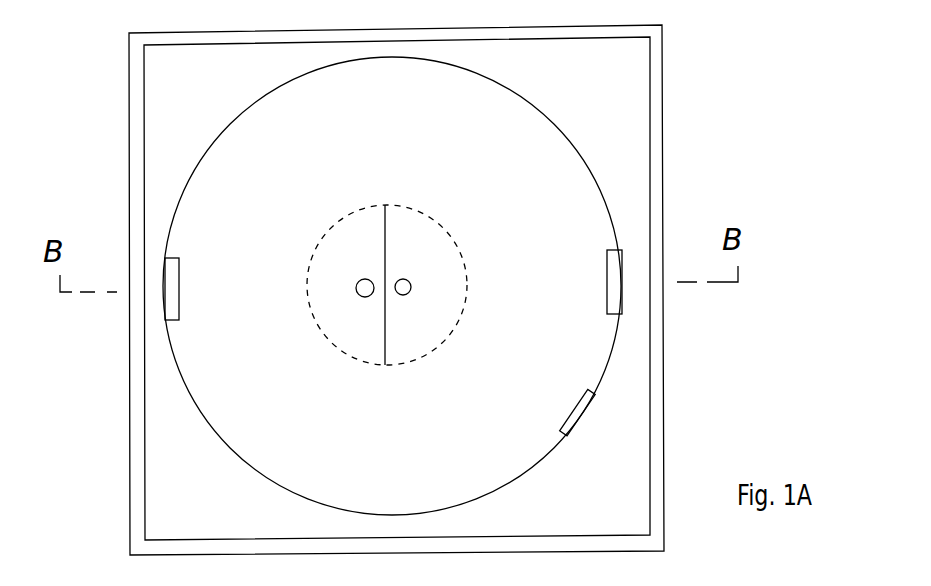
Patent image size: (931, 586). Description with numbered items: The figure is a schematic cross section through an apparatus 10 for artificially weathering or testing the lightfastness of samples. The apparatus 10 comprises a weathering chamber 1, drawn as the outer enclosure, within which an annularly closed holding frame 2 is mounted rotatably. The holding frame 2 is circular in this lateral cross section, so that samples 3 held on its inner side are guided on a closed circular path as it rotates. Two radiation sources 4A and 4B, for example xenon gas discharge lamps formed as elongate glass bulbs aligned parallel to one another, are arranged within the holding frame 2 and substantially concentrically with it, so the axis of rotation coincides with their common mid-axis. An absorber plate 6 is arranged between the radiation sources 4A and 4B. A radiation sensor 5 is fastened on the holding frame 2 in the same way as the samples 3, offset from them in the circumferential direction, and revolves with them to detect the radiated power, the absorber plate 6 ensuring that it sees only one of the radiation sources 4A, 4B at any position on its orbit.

The apparatus 10 is at (75, 96).
The weathering chamber 1 is at (130, 402).
The holding frame 2 is at (566, 134).
The samples 3 is at (180, 265).
The radiation source 4A is at (355, 294).
The radiation source 4B is at (412, 291).
The radiation sensor 5 is at (573, 400).
The absorber plate 6 is at (383, 235).